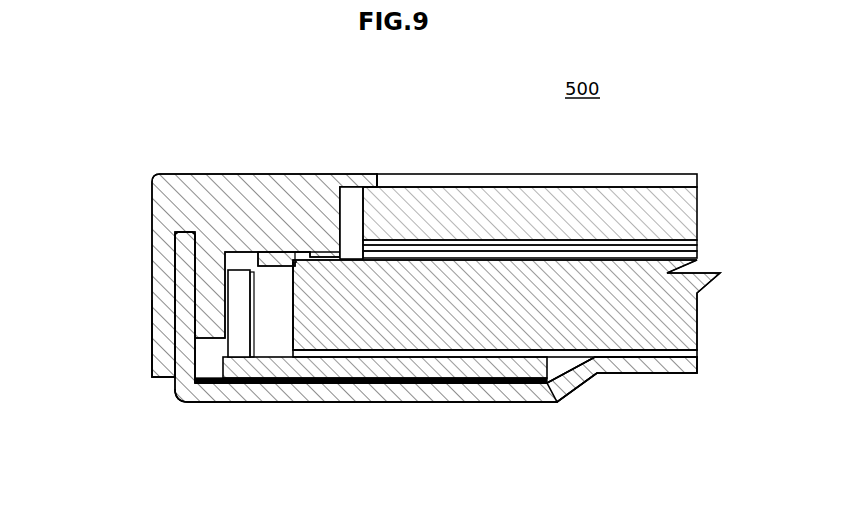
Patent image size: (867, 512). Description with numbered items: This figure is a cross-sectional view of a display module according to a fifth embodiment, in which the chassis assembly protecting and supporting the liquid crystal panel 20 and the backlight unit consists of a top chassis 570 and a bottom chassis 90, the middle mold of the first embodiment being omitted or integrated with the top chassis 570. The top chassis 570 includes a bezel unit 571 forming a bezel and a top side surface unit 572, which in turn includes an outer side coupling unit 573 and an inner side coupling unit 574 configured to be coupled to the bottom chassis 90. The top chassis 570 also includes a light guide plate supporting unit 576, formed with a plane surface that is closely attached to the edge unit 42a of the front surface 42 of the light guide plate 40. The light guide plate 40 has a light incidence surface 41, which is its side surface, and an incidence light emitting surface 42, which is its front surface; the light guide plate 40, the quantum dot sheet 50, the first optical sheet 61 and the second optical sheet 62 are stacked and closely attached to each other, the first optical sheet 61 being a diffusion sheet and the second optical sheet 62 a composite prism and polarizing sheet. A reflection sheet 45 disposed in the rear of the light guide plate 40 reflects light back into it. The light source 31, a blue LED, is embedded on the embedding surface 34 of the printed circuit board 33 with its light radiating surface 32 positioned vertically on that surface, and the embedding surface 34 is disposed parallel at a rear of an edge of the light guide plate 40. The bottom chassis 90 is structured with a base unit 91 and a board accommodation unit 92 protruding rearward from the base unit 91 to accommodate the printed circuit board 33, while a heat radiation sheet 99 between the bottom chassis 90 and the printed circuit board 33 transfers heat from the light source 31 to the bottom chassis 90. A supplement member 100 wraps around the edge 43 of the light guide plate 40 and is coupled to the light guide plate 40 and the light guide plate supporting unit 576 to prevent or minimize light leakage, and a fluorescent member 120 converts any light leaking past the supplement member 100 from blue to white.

The top chassis 570 is at (190, 174).
The bezel unit 571 is at (322, 250).
The light guide plate supporting unit 576 is at (272, 252).
The fluorescent member 120 is at (340, 187).
The liquid crystal panel 20 is at (412, 195).
The second optical sheet 62 is at (690, 241).
The first optical sheet 61 is at (697, 248).
The quantum dot sheet 50 is at (697, 257).
The light guide plate 40 is at (697, 318).
The light incidence surface 41 is at (293, 296).
The incidence light emitting surface 42 is at (545, 275).
The edge unit 42a is at (313, 262).
The edge 43 is at (280, 349).
The embedding surface 34 is at (275, 365).
The printed circuit board 33 is at (385, 383).
The heat radiation sheet 99 is at (475, 383).
The bottom chassis 90 is at (437, 402).
The inner side coupling unit 574 is at (193, 292).
The outer side coupling unit 573 is at (157, 337).
The top side surface unit 572 is at (82, 278).
The board accommodation unit 92 is at (512, 402).
The reflection sheet 45 is at (592, 370).
The base unit 91 is at (648, 374).
The light source 31 is at (240, 357).
The light radiating surface 32 is at (253, 357).
The supplement member 100 is at (222, 250).